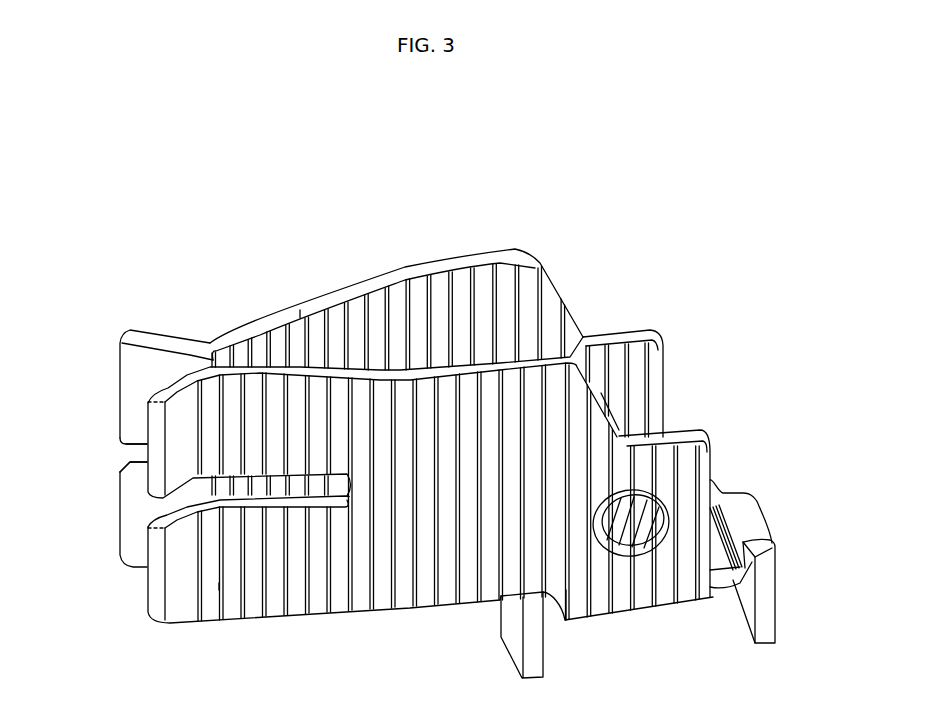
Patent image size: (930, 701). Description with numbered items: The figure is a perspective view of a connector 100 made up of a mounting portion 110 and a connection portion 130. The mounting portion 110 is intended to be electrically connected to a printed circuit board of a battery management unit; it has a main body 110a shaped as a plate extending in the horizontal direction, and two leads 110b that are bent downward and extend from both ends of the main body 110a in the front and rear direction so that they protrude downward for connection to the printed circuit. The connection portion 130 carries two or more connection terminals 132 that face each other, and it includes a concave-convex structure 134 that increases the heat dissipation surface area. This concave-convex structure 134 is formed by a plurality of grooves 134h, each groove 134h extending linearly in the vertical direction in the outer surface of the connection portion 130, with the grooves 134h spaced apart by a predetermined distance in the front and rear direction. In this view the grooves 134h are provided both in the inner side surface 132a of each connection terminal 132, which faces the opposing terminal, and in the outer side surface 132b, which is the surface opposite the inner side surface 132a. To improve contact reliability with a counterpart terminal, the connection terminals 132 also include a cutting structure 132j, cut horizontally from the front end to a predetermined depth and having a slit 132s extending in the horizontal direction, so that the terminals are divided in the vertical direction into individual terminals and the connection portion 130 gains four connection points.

The connector 100 is at (165, 129).
The mounting portion 110 is at (747, 479).
The main body 110a is at (728, 582).
The lead 110b is at (764, 640).
The connection portion 130 is at (588, 193).
The connection terminal 132 is at (580, 340).
The inner side surface 132a is at (363, 297).
The outer side surface 132b is at (427, 400).
The cutting structure 132j is at (127, 423).
The slit 132s is at (152, 515).
The concave-convex structure 134 is at (320, 587).
The groove 134h is at (303, 316).